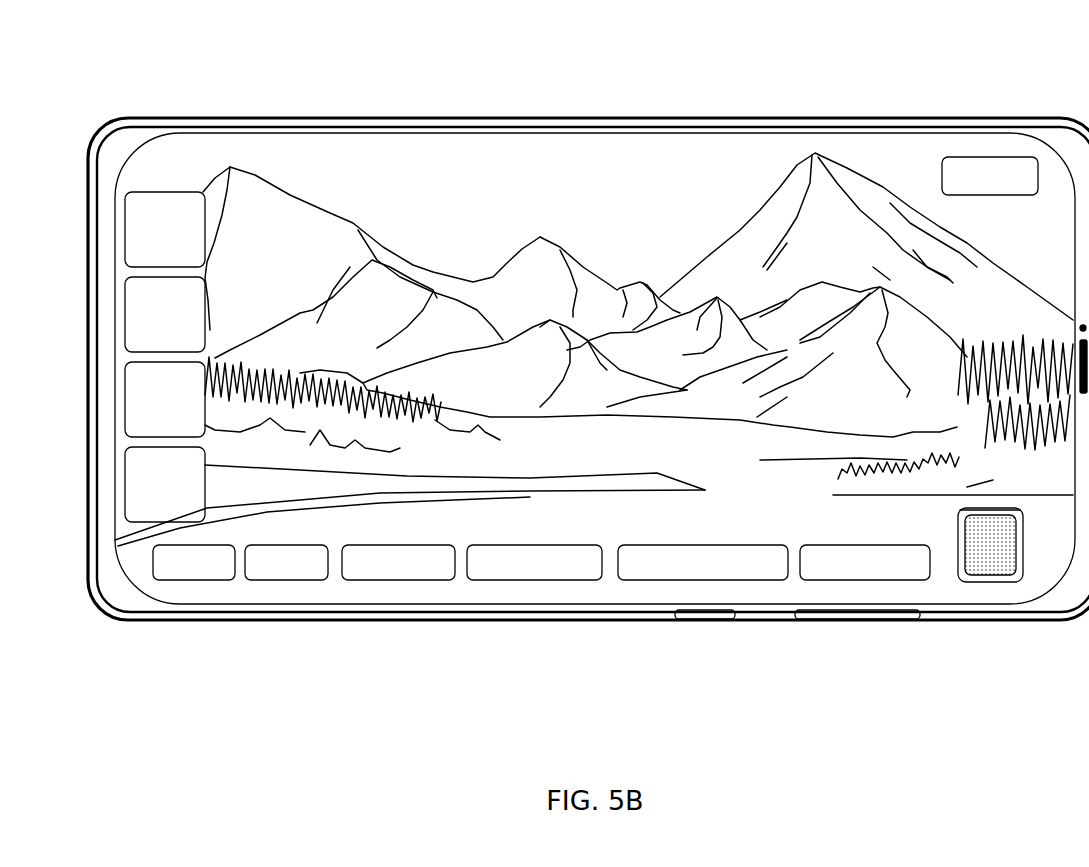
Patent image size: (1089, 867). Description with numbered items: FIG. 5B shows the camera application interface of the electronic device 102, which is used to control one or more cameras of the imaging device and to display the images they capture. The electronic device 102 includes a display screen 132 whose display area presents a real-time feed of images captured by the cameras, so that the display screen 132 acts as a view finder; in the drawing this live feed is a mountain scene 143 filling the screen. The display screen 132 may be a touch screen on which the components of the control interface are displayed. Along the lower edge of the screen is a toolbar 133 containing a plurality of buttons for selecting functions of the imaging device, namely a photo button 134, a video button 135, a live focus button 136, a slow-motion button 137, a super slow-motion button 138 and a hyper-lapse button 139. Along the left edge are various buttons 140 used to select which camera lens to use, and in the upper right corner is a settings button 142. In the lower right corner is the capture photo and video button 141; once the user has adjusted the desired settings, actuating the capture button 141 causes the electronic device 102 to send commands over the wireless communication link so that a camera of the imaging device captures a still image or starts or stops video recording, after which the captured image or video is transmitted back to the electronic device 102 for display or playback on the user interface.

The electronic device 102 is at (383, 104).
The display screen 132 is at (519, 157).
The toolbar 133 is at (541, 628).
The photo button 134 is at (207, 588).
The video button 135 is at (289, 588).
The live focus button 136 is at (394, 588).
The slow-motion button 137 is at (522, 588).
The super slow-motion button 138 is at (710, 588).
The hyper-lapse button 139 is at (866, 588).
The camera lens selection buttons 140 is at (212, 223).
The capture photo and video button 141 is at (1007, 588).
The settings button 142 is at (997, 152).
The camera preview image 143 is at (692, 207).